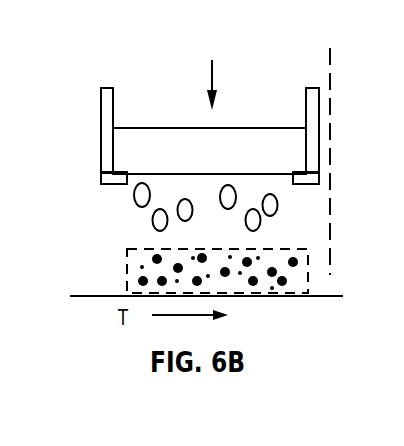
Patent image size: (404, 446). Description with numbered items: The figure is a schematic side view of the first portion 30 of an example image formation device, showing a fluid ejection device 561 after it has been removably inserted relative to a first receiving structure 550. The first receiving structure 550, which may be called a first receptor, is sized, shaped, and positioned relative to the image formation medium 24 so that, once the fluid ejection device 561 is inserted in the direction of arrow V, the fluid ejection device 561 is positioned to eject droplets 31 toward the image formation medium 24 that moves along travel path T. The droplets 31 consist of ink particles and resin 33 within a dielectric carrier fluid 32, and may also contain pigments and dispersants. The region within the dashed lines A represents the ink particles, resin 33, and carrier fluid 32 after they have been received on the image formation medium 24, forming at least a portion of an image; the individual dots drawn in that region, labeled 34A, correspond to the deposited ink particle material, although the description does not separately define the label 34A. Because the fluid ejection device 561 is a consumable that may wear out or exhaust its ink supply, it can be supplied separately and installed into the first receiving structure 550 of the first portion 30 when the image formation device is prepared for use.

The first receiving structure 550 is at (170, 123).
The fluid ejection device 561 is at (152, 127).
The first portion 30 is at (221, 152).
The droplets 31 is at (133, 195).
The dielectric carrier fluid 32 is at (268, 258).
The resin 33 is at (238, 250).
The deposited first portion region 34A is at (180, 265).
The dashed lines A is at (127, 266).
The image formation medium 24 is at (90, 296).